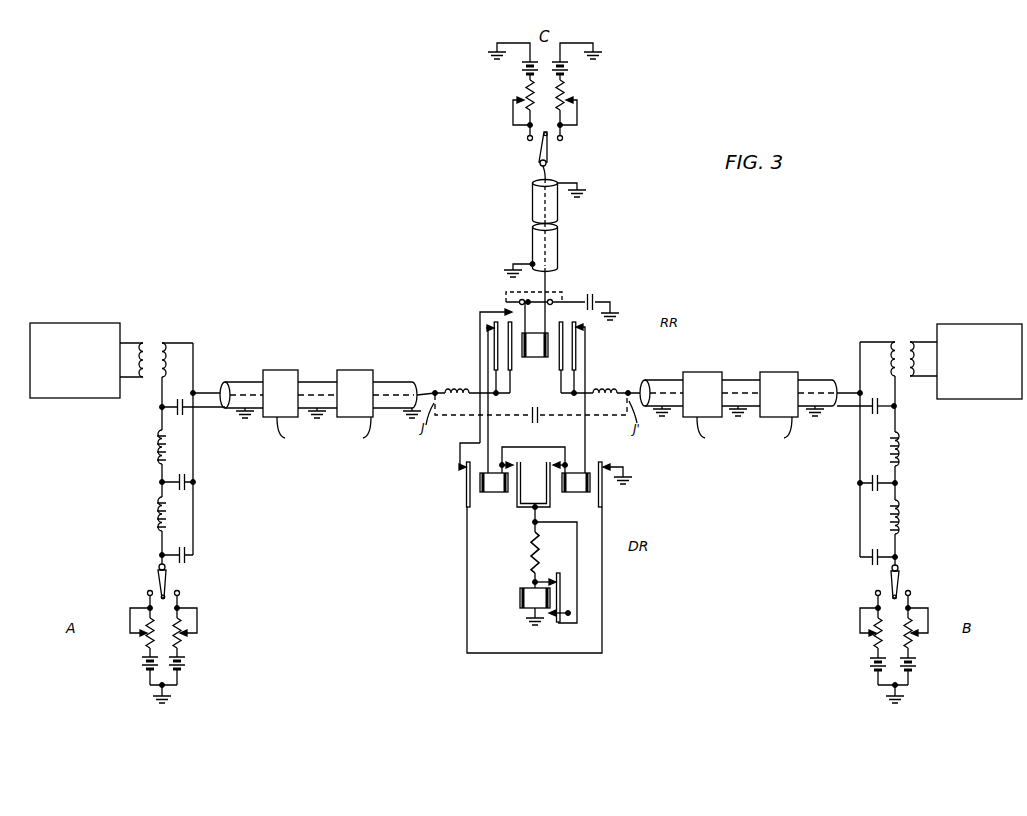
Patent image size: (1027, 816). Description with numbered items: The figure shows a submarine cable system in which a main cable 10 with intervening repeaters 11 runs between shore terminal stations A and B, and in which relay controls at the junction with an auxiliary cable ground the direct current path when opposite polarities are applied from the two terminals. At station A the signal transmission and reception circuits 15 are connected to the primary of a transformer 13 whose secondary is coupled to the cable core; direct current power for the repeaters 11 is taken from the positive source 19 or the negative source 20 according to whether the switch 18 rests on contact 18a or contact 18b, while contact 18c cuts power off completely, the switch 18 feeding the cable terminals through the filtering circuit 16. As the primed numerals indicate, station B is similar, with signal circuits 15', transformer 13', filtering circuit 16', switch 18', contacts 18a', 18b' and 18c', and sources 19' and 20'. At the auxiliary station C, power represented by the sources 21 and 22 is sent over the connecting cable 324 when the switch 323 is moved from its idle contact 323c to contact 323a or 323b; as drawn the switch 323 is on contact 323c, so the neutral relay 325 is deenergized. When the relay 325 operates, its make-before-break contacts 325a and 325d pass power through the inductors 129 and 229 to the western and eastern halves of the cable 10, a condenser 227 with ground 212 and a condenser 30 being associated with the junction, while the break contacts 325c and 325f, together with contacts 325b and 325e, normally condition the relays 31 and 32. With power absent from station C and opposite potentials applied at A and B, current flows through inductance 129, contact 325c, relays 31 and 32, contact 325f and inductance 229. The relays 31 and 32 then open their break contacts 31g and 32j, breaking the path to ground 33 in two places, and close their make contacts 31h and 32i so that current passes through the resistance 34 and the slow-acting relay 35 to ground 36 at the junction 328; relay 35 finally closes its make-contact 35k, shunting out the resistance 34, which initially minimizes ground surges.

The main cable 10 is at (252, 380).
The repeaters 11 is at (347, 370).
The transformer 13 is at (172, 370).
The signal transmission and reception circuits 15 is at (75, 348).
The filtering circuit 16 is at (159, 498).
The switch 18 is at (143, 580).
The contact 18a is at (127, 595).
The contact 18b is at (197, 595).
The contact 18c is at (185, 582).
The positive source 19 is at (128, 640).
The negative source 20 is at (193, 640).
The transformer 13' is at (898, 371).
The signal transmission and reception circuits 15' is at (979, 347).
The filtering circuit 16' is at (895, 500).
The switch 18' is at (870, 581).
The contact 18a' is at (851, 598).
The contact 18b' is at (929, 592).
The contact 18c' is at (914, 582).
The positive source 19' is at (851, 640).
The negative source 20' is at (926, 640).
The battery 21 is at (518, 71).
The battery 22 is at (575, 71).
The switch 323 is at (549, 151).
The contact 323a is at (527, 140).
The contact 323b is at (566, 140).
The contact 323c is at (541, 140).
The connecting cable 324 is at (558, 225).
The junction 328 is at (528, 288).
The relay 325 is at (527, 357).
The left-hand make-before-break contact 325a is at (514, 310).
The left-hand make-before-break contact 325b is at (518, 300).
The outer left-hand break contact 325c is at (488, 328).
The right-hand make-before-break contact 325d is at (548, 322).
The right-hand make-before-break contact 325e is at (551, 299).
The outer right-hand break contact 325f is at (584, 327).
The condenser 227 is at (592, 298).
The ground 212 is at (612, 311).
The inductor 129 is at (448, 388).
The inductor 229 is at (607, 388).
The condenser 30 is at (532, 411).
The relay 31 is at (492, 493).
The relay 32 is at (577, 493).
The left-hand break contact 31g is at (463, 472).
The right-hand make contact 31h is at (502, 462).
The left-hand make contact 32i is at (565, 462).
The right-hand break contact 32j is at (604, 464).
The ground 33 is at (630, 482).
The resistance 34 is at (528, 554).
The relay 35 is at (520, 604).
The make-contact 35k is at (548, 580).
The ground 36 is at (525, 624).